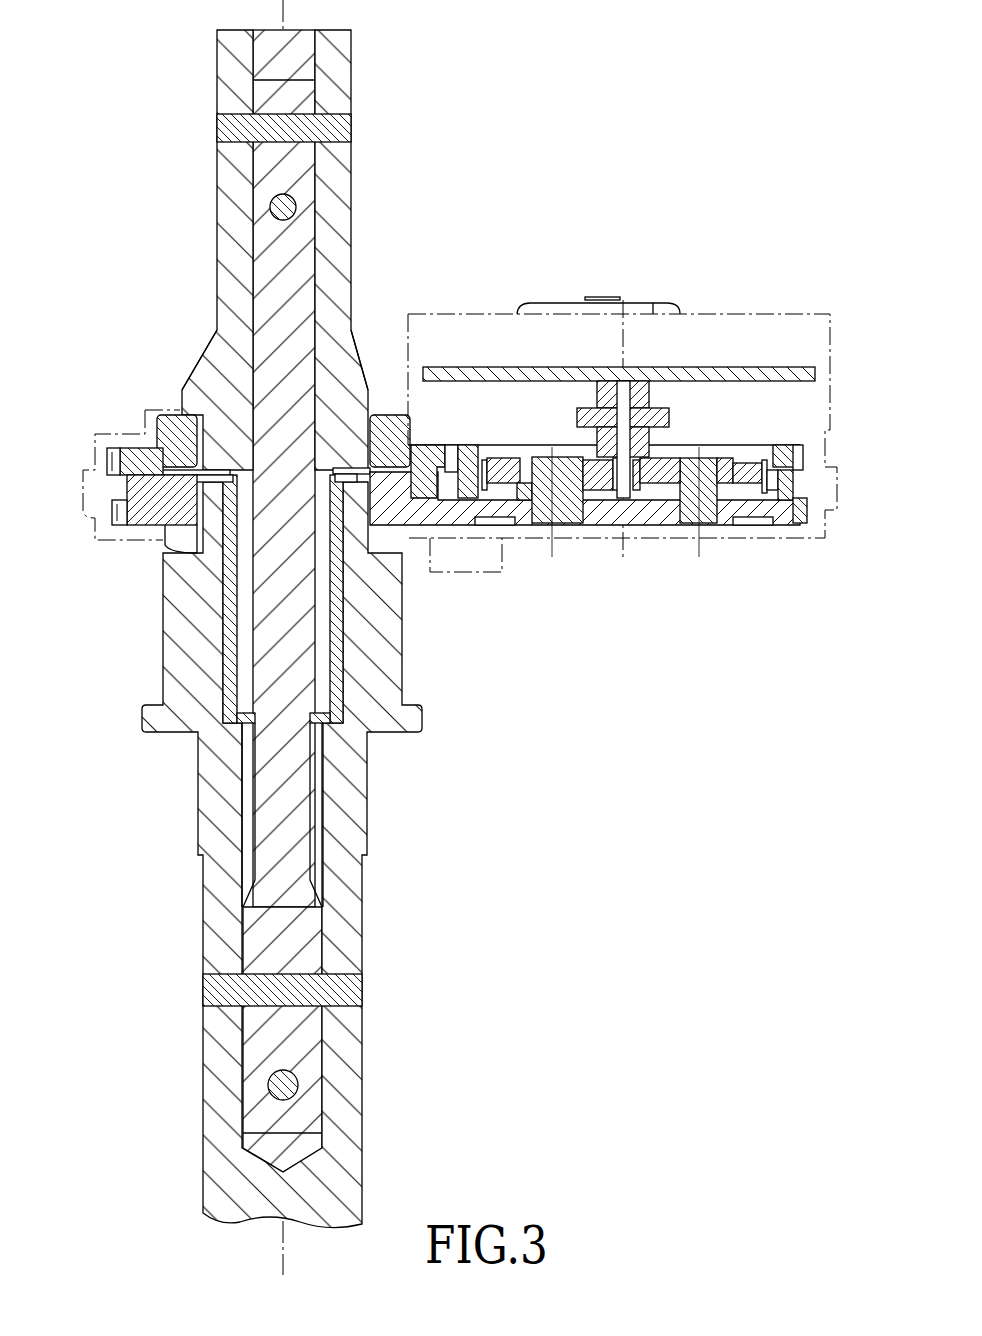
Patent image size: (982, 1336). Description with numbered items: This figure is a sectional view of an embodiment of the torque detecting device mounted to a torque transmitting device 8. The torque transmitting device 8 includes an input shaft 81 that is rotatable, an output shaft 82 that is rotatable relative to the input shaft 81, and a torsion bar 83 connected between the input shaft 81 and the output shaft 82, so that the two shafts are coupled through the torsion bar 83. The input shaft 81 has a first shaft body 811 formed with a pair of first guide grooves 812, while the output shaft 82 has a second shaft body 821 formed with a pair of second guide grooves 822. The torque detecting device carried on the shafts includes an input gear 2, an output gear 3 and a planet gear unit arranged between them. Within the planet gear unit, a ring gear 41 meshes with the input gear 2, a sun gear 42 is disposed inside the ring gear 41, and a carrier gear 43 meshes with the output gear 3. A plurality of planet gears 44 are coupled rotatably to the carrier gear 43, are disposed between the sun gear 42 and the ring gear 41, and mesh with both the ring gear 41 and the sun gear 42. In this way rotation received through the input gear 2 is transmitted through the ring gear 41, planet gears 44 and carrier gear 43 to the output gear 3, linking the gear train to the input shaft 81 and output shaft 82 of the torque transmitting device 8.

The torque transmitting device 8 is at (237, 629).
The input shaft 81 is at (229, 250).
The first shaft body 811 is at (233, 433).
The first guide grooves 812 is at (195, 420).
The torsion bar 83 is at (262, 302).
The output shaft 82 is at (240, 848).
The second shaft body 821 is at (213, 510).
The second guide grooves 822 is at (205, 540).
The input gear 2 is at (392, 404).
The output gear 3 is at (408, 535).
The ring gear 41 is at (462, 455).
The sun gear 42 is at (650, 440).
The carrier gear 43 is at (460, 525).
The planet gears 44 is at (518, 485).